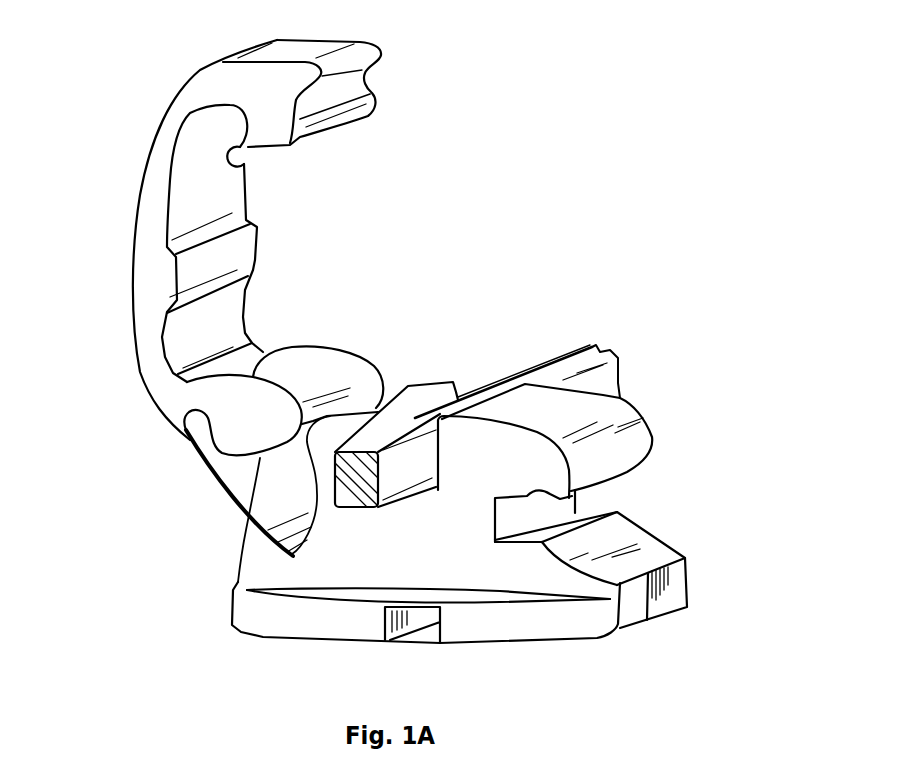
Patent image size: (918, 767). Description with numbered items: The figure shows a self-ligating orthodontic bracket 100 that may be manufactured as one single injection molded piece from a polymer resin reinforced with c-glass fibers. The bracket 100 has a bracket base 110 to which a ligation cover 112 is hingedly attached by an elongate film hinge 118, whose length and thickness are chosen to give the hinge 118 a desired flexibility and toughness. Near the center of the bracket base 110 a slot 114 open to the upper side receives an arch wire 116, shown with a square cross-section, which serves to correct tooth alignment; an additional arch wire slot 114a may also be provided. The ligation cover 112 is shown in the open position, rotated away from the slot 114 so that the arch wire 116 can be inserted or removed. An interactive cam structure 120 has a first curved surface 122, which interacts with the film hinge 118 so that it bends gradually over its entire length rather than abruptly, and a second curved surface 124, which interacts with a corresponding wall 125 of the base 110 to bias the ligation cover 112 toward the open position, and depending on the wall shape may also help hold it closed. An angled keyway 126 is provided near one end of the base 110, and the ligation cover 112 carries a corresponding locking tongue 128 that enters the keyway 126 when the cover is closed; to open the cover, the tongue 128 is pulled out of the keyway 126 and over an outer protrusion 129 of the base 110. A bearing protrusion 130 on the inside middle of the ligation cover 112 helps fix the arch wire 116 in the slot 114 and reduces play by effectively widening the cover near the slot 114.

The orthodontic bracket 100 is at (633, 231).
The bracket base 110 is at (490, 568).
The ligation cover 112 is at (160, 157).
The slot 114 is at (483, 372).
The additional arch wire slot 114a is at (532, 512).
The arch wire 116 is at (530, 377).
The elongate film hinge 118 is at (223, 491).
The interactive cam structure 120 is at (260, 404).
The first curved surface 122 is at (257, 455).
The second curved surface 124 is at (289, 393).
The wall 125 is at (313, 428).
The angled keyway 126 is at (617, 512).
The locking tongue 128 is at (231, 161).
The outer protrusion 129 is at (645, 443).
The bearing protrusion 130 is at (163, 277).